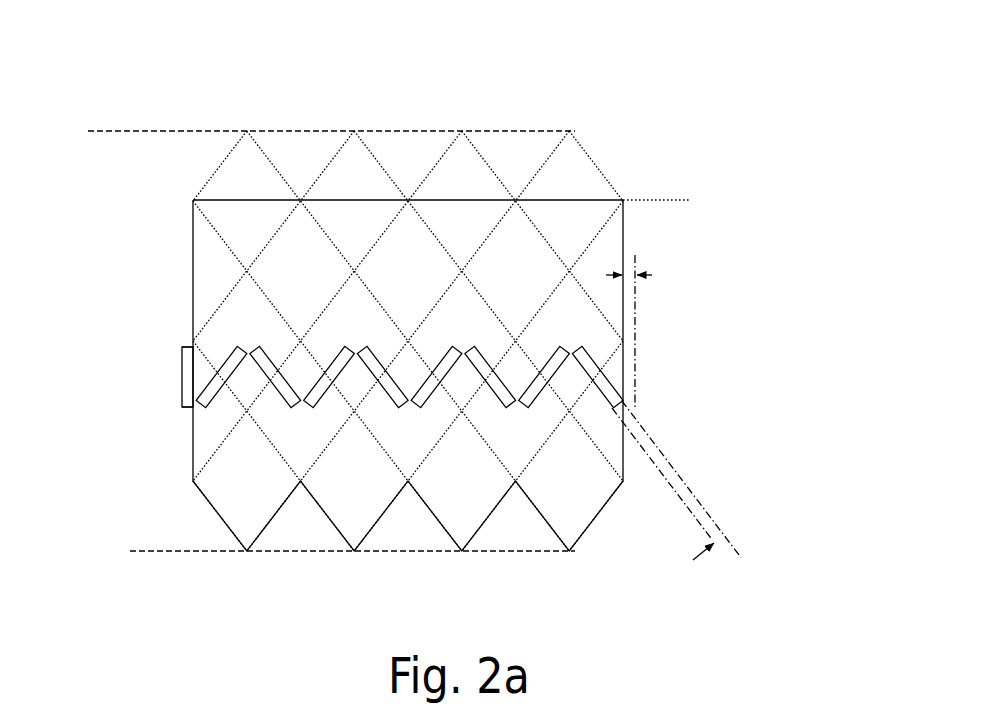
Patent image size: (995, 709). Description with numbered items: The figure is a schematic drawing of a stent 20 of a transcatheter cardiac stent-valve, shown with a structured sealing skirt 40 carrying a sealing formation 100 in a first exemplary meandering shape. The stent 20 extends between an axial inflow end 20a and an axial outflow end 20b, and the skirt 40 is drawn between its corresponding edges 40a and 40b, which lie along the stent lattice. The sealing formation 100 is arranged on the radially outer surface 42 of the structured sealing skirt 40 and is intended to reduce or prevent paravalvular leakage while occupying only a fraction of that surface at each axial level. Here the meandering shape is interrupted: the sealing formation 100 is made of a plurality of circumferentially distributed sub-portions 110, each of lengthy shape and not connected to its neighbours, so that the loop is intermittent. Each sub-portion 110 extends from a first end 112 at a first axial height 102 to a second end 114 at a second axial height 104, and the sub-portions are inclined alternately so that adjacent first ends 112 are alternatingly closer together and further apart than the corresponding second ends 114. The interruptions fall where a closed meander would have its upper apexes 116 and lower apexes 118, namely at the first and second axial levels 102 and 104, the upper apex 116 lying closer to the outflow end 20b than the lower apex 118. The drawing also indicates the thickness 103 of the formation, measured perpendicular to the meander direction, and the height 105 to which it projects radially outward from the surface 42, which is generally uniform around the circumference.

The stent 20 is at (524, 94).
The axial inflow end 20a is at (301, 552).
The axial outflow end 20b is at (308, 130).
The structured sealing skirt 40 is at (193, 268).
The first edge of carrier layer 40a is at (193, 551).
The second edge of carrier layer 40b is at (682, 200).
The radially outer surface 42 is at (190, 216).
The sealing formation 100 is at (179, 378).
The first axial height 102 is at (578, 348).
The thickness 103 is at (727, 537).
The second axial height 104 is at (602, 405).
The height 105 is at (650, 275).
The sub-portion 110 is at (310, 403).
The first end 112 is at (183, 345).
The second end 114 is at (185, 412).
The upper apex 116 is at (467, 347).
The lower apex 118 is at (525, 404).